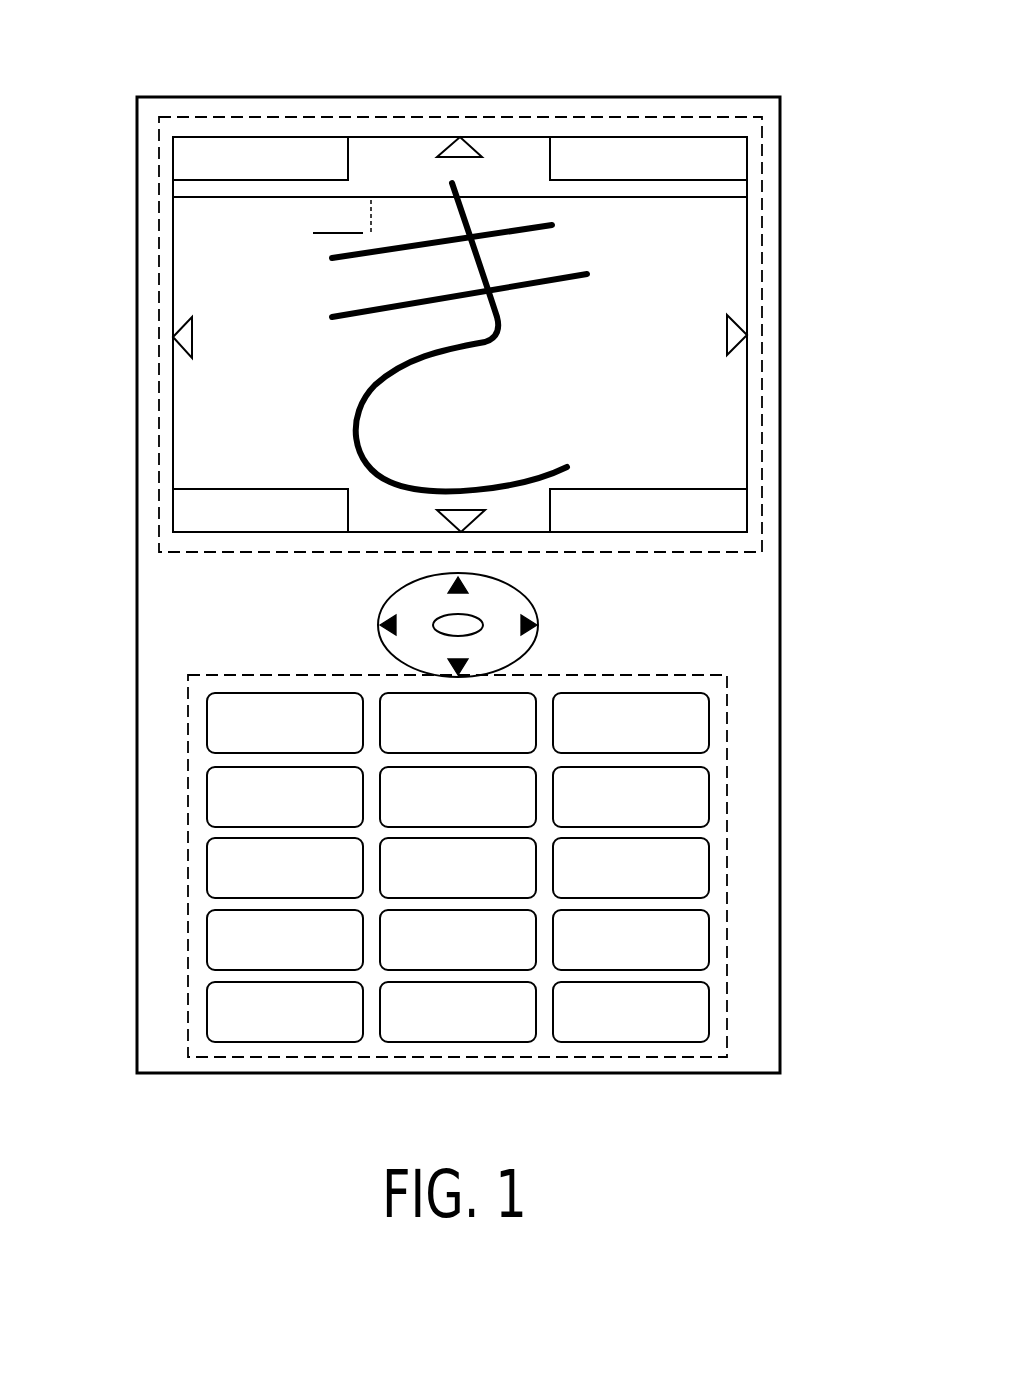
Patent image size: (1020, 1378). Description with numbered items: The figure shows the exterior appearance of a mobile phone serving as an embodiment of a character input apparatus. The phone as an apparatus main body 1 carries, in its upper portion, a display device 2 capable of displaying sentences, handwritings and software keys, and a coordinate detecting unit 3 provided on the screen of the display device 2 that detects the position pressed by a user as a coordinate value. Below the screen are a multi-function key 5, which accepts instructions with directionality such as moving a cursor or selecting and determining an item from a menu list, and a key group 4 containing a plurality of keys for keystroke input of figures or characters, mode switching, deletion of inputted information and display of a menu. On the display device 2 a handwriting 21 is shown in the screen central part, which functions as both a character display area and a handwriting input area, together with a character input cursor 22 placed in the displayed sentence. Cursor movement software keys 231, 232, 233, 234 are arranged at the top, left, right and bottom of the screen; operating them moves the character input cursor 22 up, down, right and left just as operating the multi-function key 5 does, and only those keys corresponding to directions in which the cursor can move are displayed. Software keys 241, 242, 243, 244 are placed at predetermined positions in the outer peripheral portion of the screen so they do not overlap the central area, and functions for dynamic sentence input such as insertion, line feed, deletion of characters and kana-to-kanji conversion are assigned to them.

The apparatus main body 1 is at (333, 97).
The display device 2 is at (173, 237).
The coordinate detecting unit 3 is at (147, 390).
The key group 4 is at (188, 814).
The multi-function key 5 is at (378, 615).
The handwriting 21 is at (548, 277).
The character input cursor 22 is at (371, 206).
The cursor movement software key 231 is at (478, 143).
The cursor movement software key 232 is at (173, 316).
The cursor movement software key 233 is at (747, 318).
The cursor movement software key 234 is at (485, 520).
The software key 241 is at (173, 155).
The software key 242 is at (747, 158).
The software key 243 is at (173, 508).
The software key 244 is at (747, 510).